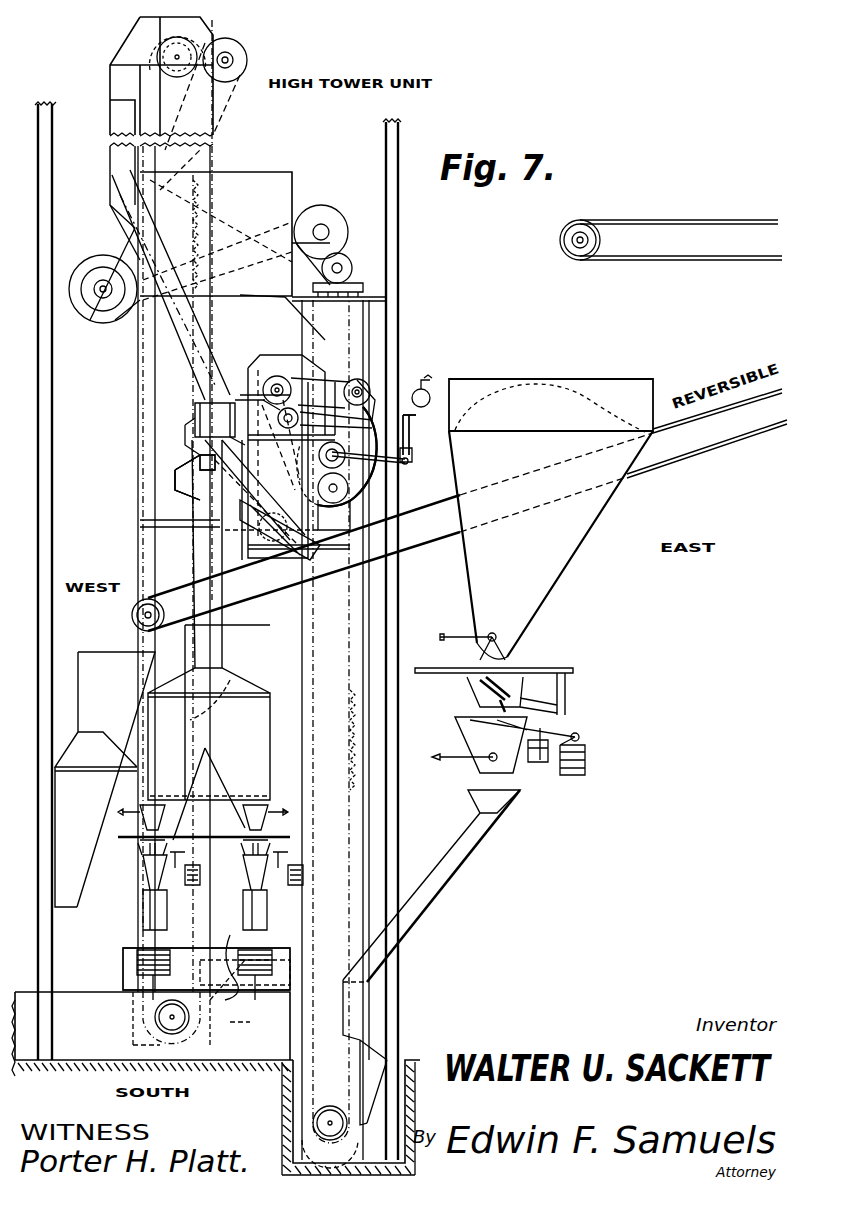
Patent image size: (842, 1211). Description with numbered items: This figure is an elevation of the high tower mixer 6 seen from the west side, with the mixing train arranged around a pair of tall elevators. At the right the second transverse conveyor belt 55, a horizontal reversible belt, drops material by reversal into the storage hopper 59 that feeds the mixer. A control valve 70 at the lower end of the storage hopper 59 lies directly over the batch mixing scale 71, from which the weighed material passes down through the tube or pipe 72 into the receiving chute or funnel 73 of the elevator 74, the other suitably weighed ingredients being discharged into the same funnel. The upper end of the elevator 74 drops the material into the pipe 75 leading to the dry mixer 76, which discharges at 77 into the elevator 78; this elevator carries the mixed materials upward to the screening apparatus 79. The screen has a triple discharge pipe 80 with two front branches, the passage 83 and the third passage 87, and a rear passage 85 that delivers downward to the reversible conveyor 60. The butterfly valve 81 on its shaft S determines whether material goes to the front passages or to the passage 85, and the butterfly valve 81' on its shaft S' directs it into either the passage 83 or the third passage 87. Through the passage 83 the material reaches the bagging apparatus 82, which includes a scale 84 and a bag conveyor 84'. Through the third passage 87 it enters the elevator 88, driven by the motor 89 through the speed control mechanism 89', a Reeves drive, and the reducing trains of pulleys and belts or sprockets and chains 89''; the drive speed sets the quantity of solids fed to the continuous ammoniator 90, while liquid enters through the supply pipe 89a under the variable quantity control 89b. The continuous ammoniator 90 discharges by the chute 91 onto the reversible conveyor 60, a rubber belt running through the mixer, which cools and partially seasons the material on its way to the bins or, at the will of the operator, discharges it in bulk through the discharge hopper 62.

The high tower mixer 6 is at (313, 200).
The second transverse conveyor belt 55 is at (676, 221).
The storage hopper 59 is at (612, 378).
The reversible conveyor 60 is at (690, 458).
The discharge hopper 62 is at (57, 790).
The control valve 70 is at (440, 637).
The batch mixing scale 71 is at (455, 748).
The tube or pipe 72 is at (445, 880).
The receiving chute or funnel 73 is at (403, 1055).
The elevator 74 is at (385, 833).
The pipe 75 is at (262, 588).
The dry mixer 76 is at (270, 648).
The mixer discharge 77 is at (250, 998).
The elevator 78 is at (222, 182).
The screening apparatus 79 is at (292, 205).
The triple discharge pipe 80 is at (200, 432).
The valve 81 is at (161, 417).
The valve 81' is at (159, 472).
The bagging apparatus 82 is at (212, 762).
The passage 83 is at (190, 490).
The scale 84 is at (293, 892).
The bag conveyor 84' is at (235, 967).
The passage 85 is at (290, 545).
The third passage 87 is at (250, 385).
The elevator 88 is at (282, 372).
The motor 89 is at (337, 382).
The speed control mechanism 89' is at (420, 411).
The reducing trains of pulleys and belts or sprockets and chains 89'' is at (371, 416).
The supply pipe 89a is at (410, 460).
The variable quantity control 89b is at (438, 388).
The continuous ammoniator 90 is at (405, 448).
The chute 91 is at (350, 505).
The shaft S is at (171, 285).
The shaft S' is at (130, 478).